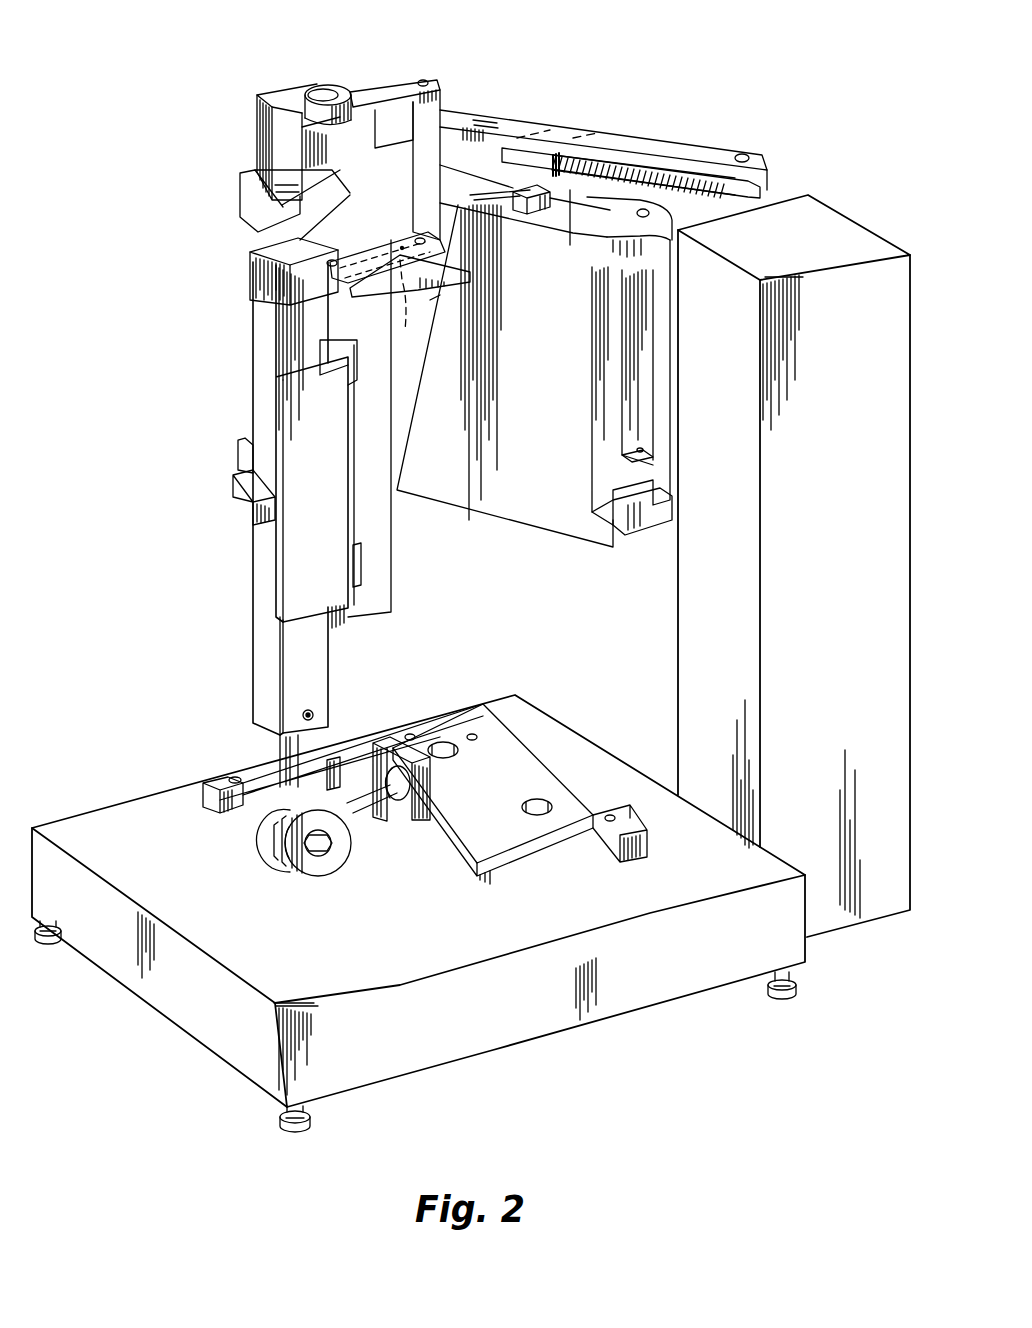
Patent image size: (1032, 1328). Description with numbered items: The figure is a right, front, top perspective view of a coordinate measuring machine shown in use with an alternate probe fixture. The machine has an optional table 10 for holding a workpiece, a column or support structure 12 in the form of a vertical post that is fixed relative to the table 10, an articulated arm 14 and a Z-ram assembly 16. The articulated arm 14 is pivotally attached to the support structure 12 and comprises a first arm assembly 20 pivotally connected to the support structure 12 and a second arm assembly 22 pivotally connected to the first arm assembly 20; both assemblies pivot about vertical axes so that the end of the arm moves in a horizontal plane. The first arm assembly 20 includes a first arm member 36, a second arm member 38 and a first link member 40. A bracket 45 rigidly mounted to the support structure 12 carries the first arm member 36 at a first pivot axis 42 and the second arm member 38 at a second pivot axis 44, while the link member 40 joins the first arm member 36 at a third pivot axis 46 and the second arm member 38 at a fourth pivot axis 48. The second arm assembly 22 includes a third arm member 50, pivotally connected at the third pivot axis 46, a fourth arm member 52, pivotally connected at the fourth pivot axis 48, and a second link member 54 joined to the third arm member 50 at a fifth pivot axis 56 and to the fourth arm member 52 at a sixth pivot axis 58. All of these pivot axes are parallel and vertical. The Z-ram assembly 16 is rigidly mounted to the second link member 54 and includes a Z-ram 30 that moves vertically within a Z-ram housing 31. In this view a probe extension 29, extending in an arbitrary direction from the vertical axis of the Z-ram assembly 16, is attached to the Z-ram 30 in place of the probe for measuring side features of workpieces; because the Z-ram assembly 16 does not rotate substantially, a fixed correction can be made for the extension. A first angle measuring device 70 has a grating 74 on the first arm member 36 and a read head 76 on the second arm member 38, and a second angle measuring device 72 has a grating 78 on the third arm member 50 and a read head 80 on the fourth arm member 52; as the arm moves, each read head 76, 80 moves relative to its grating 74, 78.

The table 10 is at (182, 1015).
The support structure 12 is at (824, 217).
The articulated arm 14 is at (245, 115).
The Z-ram assembly 16 is at (258, 586).
The first arm assembly 20 is at (552, 530).
The second arm assembly 22 is at (250, 246).
The probe extension 29 is at (305, 870).
The Z-ram 30 is at (260, 670).
The Z-ram housing 31 is at (343, 530).
The first arm member 36 is at (712, 152).
The second arm member 38 is at (474, 185).
The first link member 40 is at (378, 88).
The first pivot axis 42 is at (746, 154).
The second pivot axis 44 is at (643, 208).
The bracket 45 is at (672, 392).
The third pivot axis 46 is at (427, 79).
The fourth pivot axis 48 is at (322, 90).
The third arm member 50 is at (432, 140).
The fourth arm member 52 is at (290, 210).
The second link member 54 is at (325, 266).
The fifth pivot axis 56 is at (438, 238).
The sixth pivot axis 58 is at (335, 278).
The first angle measuring device 70 is at (560, 172).
The second angle measuring device 72 is at (438, 300).
The grating 74 is at (676, 170).
The read head 76 is at (566, 232).
The grating 78 is at (462, 285).
The read head 80 is at (410, 310).